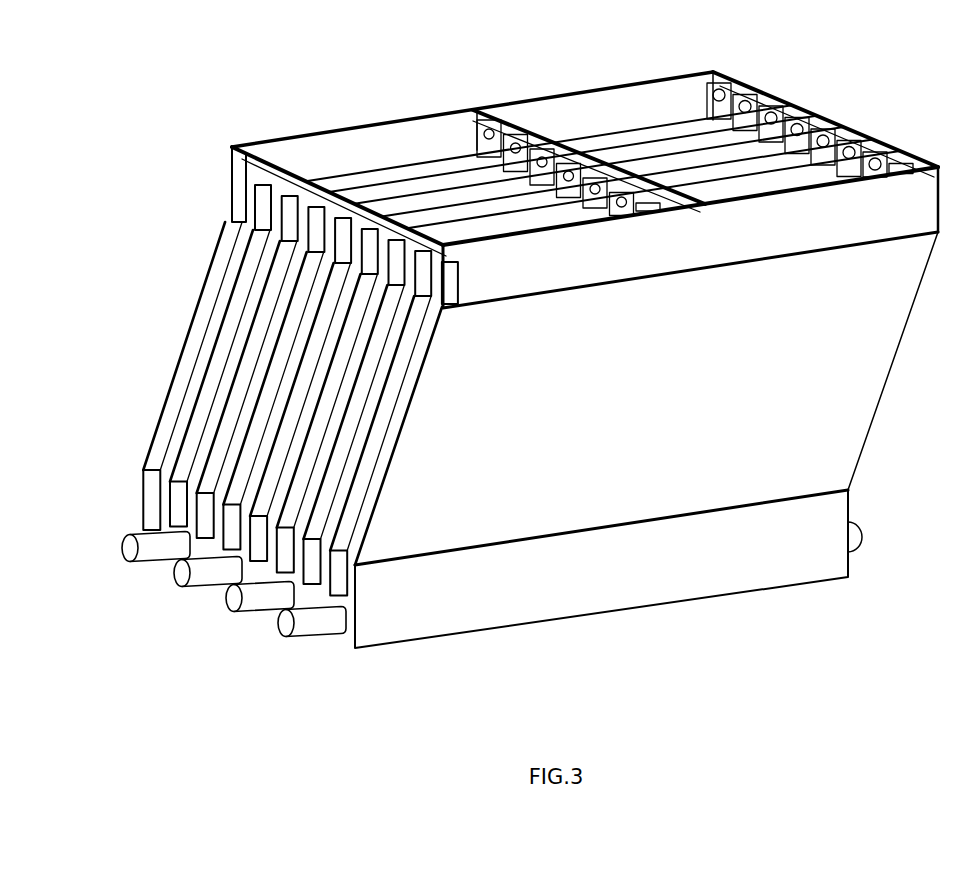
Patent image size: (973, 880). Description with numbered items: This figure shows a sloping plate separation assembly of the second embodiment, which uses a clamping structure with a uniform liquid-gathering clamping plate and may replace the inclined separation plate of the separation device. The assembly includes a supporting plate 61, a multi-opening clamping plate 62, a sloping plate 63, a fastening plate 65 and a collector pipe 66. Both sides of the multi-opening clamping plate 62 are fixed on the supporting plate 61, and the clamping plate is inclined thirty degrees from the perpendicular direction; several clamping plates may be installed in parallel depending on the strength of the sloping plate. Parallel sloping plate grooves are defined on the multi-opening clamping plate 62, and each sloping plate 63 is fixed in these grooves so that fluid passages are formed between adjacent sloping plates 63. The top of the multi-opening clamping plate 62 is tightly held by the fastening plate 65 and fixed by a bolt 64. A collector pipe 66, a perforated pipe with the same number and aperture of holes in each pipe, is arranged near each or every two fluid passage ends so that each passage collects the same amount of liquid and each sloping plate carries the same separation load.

The supporting plate 61 is at (395, 120).
The multi-opening clamping plate 62 is at (257, 292).
The sloping plate 63 is at (636, 143).
The bolt 64 is at (300, 190).
The fastening plate 65 is at (518, 137).
The collector pipe 66 is at (313, 632).